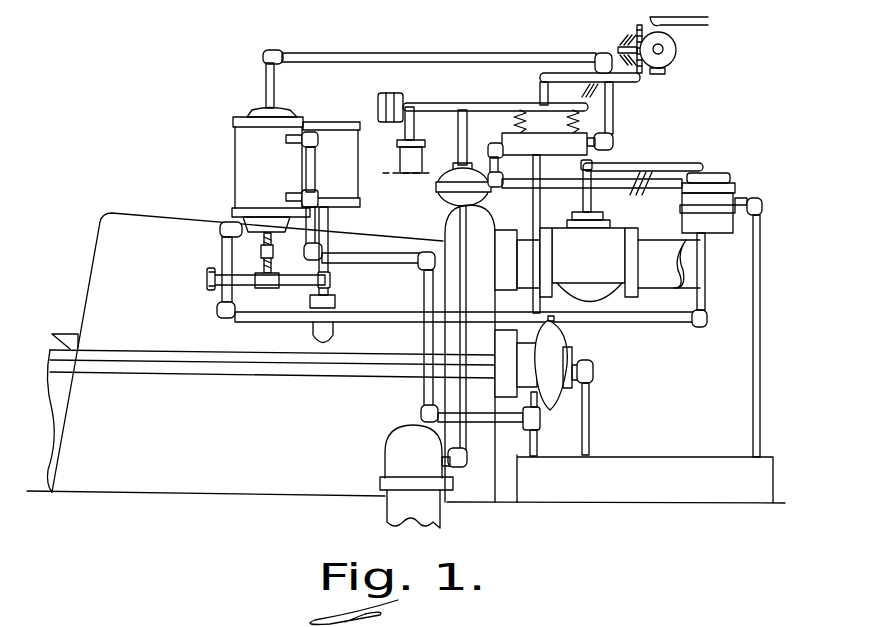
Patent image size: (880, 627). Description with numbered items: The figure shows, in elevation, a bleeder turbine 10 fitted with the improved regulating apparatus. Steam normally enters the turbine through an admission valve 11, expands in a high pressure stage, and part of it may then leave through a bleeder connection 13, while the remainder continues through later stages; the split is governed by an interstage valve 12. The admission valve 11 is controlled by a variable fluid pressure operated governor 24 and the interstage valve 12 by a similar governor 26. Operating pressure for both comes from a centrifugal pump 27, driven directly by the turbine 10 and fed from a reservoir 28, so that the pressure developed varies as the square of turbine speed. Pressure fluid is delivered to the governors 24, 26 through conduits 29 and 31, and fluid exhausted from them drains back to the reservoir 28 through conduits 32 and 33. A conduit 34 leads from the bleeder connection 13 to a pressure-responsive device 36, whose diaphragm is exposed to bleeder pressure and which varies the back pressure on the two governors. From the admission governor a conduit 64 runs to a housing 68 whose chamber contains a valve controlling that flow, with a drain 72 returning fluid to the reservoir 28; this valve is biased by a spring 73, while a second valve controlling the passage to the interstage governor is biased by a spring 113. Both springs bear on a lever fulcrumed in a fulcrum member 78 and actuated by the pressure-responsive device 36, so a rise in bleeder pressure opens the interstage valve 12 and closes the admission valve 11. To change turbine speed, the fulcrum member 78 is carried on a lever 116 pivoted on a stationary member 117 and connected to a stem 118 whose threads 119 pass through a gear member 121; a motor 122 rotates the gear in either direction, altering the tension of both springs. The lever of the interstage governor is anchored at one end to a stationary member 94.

The turbine 10 is at (141, 237).
The admission valve 11 is at (573, 248).
The interstage valve 12 is at (352, 342).
The bleeder connection 13 is at (386, 502).
The governor 24 is at (734, 186).
The governor 26 is at (258, 155).
The centrifugal pump 27 is at (560, 338).
The reservoir 28 is at (666, 468).
The conduit 29 is at (706, 268).
The conduit 31 is at (217, 233).
The conduit 32 is at (386, 263).
The conduit 33 is at (762, 303).
The conduit 34 is at (460, 442).
The pressure-responsive device 36 is at (453, 174).
The conduit 64 is at (664, 188).
The housing 68 is at (519, 142).
The drain 72 is at (542, 168).
The spring 73 is at (514, 118).
The fulcrum member 78 is at (540, 88).
The stationary member 94 is at (206, 276).
The spring 113 is at (577, 124).
The lever 116 is at (622, 82).
The stationary member 117 is at (580, 91).
The stem 118 is at (647, 70).
The threads 119 is at (636, 26).
The gear member 121 is at (658, 72).
The motor 122 is at (678, 48).